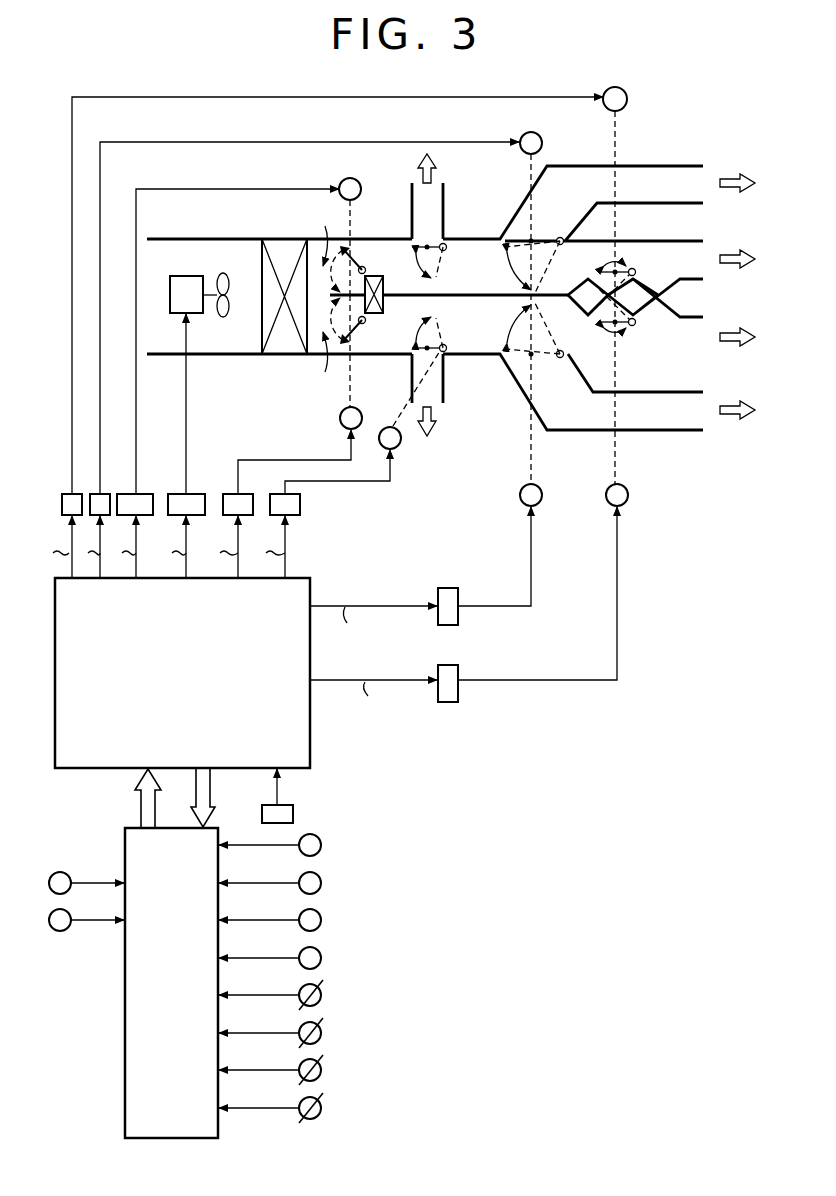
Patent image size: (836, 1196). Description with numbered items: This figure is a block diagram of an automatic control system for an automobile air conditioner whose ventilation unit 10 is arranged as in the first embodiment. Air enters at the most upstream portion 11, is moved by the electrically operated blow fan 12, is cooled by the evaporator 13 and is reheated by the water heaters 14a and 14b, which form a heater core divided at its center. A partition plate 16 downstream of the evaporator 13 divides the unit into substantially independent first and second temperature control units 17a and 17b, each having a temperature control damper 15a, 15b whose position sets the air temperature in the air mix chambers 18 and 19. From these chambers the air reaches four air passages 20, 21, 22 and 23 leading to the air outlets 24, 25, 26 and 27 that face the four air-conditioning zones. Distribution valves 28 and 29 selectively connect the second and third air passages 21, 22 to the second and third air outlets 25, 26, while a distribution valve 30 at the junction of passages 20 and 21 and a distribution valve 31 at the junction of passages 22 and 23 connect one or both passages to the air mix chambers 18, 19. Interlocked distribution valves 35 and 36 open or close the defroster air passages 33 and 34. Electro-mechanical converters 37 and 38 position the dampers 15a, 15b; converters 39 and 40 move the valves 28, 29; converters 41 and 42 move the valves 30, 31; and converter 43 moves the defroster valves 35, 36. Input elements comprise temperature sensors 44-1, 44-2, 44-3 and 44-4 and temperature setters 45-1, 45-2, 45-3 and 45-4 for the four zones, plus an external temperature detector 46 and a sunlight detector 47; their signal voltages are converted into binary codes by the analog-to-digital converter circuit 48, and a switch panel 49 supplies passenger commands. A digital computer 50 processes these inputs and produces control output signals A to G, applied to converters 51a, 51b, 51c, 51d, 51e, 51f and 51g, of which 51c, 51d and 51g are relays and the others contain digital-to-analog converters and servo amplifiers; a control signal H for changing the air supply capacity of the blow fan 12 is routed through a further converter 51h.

The ventilation unit 10 is at (186, 239).
The most upstream portion 11 is at (156, 249).
The blow fan 12 is at (223, 273).
The evaporator 13 is at (276, 249).
The water heater 14a is at (366, 266).
The water heater 14b is at (366, 324).
The temperature control damper 15a is at (378, 237).
The temperature control damper 15b is at (377, 355).
The partition plate 16 is at (474, 294).
The first temperature control unit 17a is at (305, 235).
The second temperature control unit 17b is at (305, 363).
The air mix chamber 18 is at (392, 288).
The air mix chamber 19 is at (404, 318).
The first air passage 20 is at (573, 202).
The second air passage 21 is at (630, 287).
The third air passage 22 is at (592, 304).
The fourth air passage 23 is at (573, 392).
The first air outlet 24 is at (728, 174).
The second air outlet 25 is at (733, 253).
The third air outlet 26 is at (733, 346).
The fourth air outlet 27 is at (733, 420).
The distribution valve 28 is at (636, 270).
The distribution valve 29 is at (636, 324).
The distribution valve 30 is at (560, 236).
The distribution valve 31 is at (527, 358).
The defroster air passage 33 is at (442, 186).
The defroster air passage 34 is at (439, 403).
The distribution valve 35 is at (445, 242).
The distribution valve 36 is at (445, 352).
The electro-mechanical converter 37 is at (345, 182).
The electro-mechanical converter 38 is at (340, 420).
The electro-mechanical converter 39 is at (627, 94).
The electro-mechanical converter 40 is at (628, 497).
The electro-mechanical converter 41 is at (521, 136).
The electro-mechanical converter 42 is at (541, 502).
The electro-mechanical converter 43 is at (400, 436).
The temperature sensor 44-1 is at (322, 845).
The temperature sensor 44-2 is at (322, 883).
The temperature sensor 44-3 is at (322, 920).
The temperature sensor 44-4 is at (322, 958).
The temperature setter 45-1 is at (322, 995).
The temperature setter 45-2 is at (322, 1033).
The temperature setter 45-3 is at (322, 1070).
The temperature setter 45-4 is at (322, 1108).
The external temperature detector 46 is at (62, 872).
The sunlight detector 47 is at (62, 931).
The analog-to-digital converter circuit 48 is at (124, 1108).
The switch panel 49 is at (293, 810).
The digital computer 50 is at (310, 595).
The converter 51a is at (126, 494).
The converter 51b is at (233, 494).
The converter 51c is at (69, 494).
The converter 51d is at (458, 700).
The converter 51e is at (94, 494).
The converter 51f is at (447, 586).
The converter 51g is at (300, 504).
The driver circuit 51h is at (182, 494).